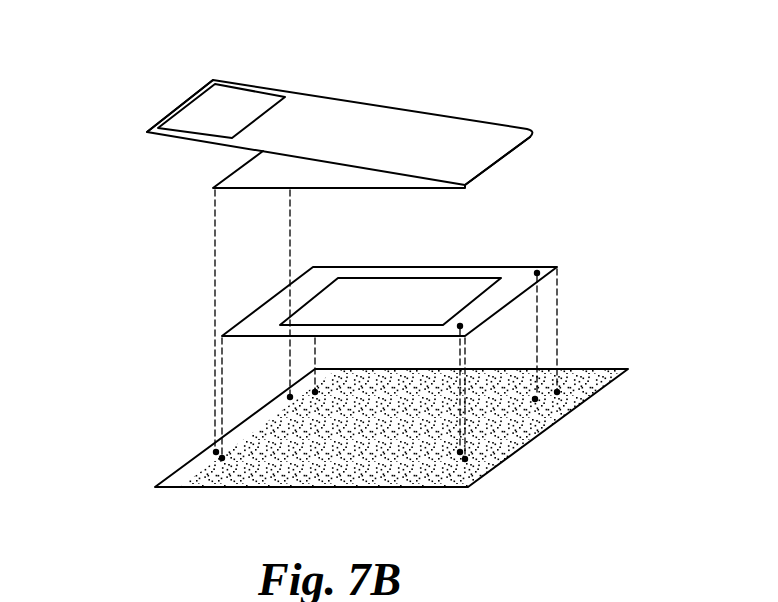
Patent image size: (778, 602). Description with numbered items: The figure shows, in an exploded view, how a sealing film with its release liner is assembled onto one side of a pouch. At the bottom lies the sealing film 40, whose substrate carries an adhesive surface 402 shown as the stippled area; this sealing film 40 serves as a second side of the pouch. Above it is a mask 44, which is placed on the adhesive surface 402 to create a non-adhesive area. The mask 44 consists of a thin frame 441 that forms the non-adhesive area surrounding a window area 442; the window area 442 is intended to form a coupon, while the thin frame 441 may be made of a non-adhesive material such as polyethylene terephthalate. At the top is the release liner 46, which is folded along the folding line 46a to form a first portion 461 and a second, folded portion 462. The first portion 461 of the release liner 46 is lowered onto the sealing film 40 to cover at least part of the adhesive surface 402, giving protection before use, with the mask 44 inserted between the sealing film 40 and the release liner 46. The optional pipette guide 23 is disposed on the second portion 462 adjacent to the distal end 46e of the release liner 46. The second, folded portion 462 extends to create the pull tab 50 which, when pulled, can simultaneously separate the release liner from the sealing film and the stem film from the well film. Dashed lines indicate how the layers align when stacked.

The pull tab 50 is at (383, 73).
The release liner 46 is at (498, 133).
The distal end 46e is at (160, 110).
The folding line 46a is at (523, 143).
The first portion 461 is at (243, 176).
The second, folded portion 462 is at (393, 140).
The pipette guide 23 is at (202, 102).
The mask 44 is at (568, 260).
The thin frame 441 is at (515, 275).
The window area 442 is at (405, 311).
The sealing film 40 is at (545, 430).
The adhesive surface 402 is at (282, 468).